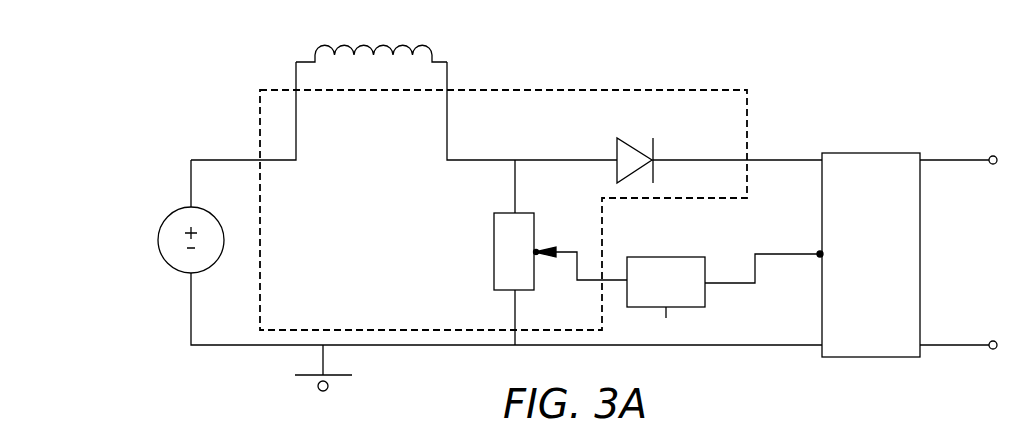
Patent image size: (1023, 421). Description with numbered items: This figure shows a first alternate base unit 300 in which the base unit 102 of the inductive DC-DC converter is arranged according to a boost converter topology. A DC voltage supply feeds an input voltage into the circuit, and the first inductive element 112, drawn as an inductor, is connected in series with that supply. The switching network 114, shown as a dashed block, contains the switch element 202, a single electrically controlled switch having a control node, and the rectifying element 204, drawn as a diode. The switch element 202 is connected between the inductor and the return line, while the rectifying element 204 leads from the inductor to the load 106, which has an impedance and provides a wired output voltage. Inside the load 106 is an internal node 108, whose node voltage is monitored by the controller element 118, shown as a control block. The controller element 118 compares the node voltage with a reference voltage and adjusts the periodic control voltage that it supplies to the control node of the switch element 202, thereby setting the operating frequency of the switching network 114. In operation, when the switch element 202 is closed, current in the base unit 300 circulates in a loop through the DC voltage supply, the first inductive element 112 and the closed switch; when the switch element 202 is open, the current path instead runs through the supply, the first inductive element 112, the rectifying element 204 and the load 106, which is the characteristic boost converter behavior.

The first alternate base unit 300 is at (719, 397).
The base unit 102 is at (172, 213).
The first inductive element 112 is at (341, 46).
The switching network 114 is at (640, 92).
The rectifying element 204 is at (617, 138).
The switch element 202 is at (494, 255).
The controller element 118 is at (668, 257).
The internal node 108 is at (818, 258).
The load 106 is at (872, 153).